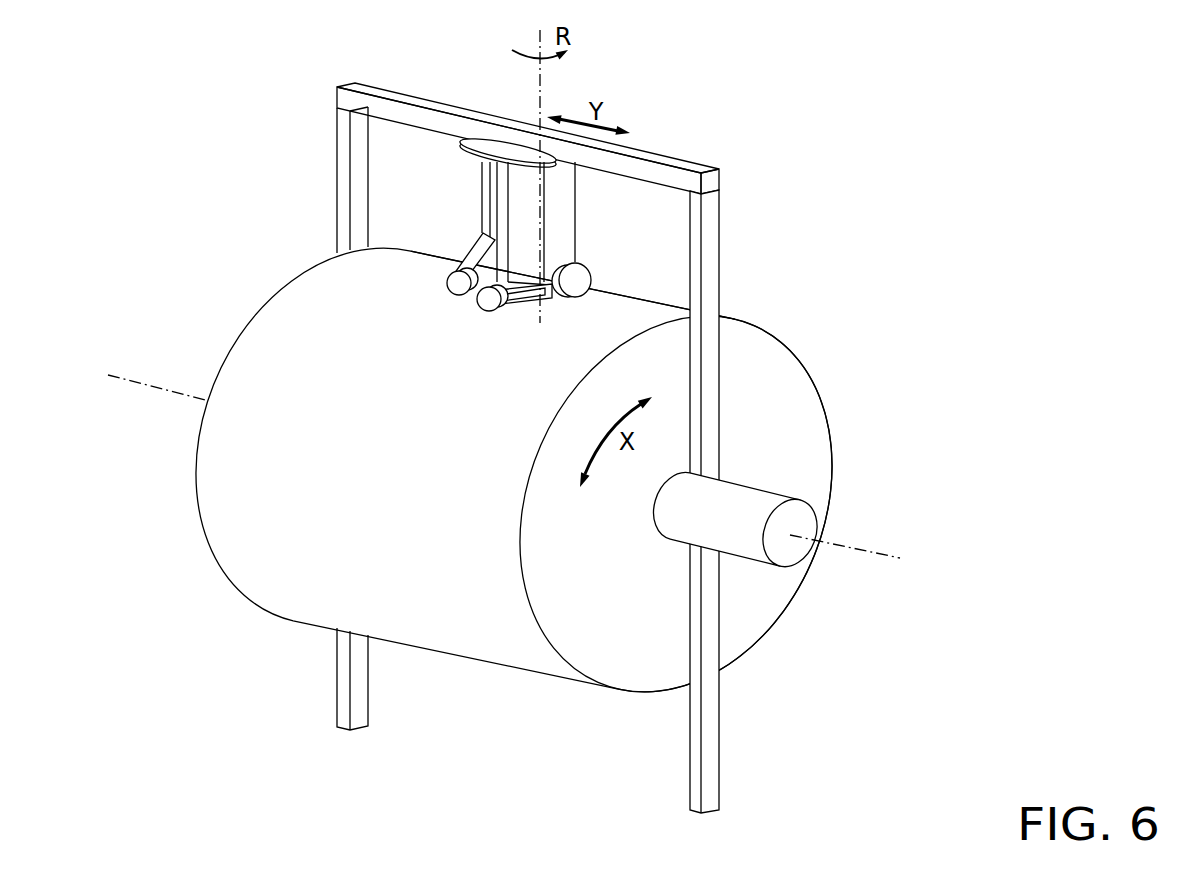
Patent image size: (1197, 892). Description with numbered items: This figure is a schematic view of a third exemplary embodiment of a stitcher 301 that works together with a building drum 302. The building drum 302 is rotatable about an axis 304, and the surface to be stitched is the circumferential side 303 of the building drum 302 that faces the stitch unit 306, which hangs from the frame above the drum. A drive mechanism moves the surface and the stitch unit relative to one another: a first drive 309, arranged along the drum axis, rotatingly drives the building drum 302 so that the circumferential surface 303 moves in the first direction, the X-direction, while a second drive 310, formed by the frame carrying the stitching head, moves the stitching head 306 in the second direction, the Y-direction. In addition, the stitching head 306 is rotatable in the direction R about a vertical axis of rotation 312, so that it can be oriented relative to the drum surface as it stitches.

The stitcher 301 is at (797, 148).
The building drum 302 is at (542, 485).
The circumferential side 303 is at (503, 380).
The axis 304 is at (108, 375).
The stitch unit 306 is at (560, 242).
The first drive 309 is at (790, 553).
The second drive 310 is at (382, 103).
The axis of rotation 312 is at (543, 85).